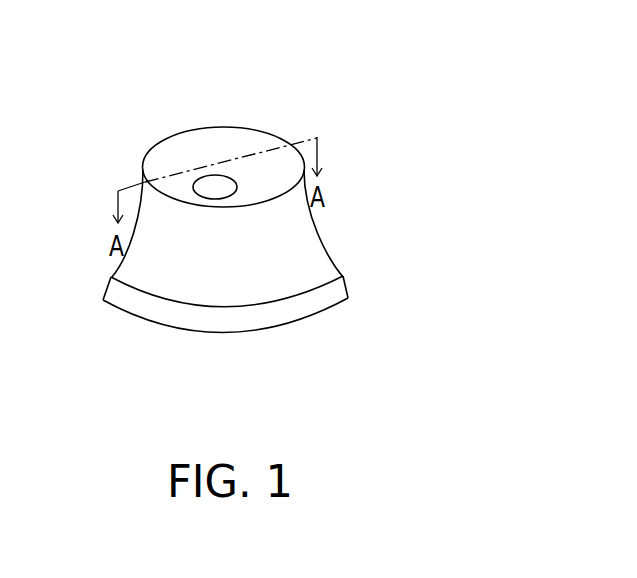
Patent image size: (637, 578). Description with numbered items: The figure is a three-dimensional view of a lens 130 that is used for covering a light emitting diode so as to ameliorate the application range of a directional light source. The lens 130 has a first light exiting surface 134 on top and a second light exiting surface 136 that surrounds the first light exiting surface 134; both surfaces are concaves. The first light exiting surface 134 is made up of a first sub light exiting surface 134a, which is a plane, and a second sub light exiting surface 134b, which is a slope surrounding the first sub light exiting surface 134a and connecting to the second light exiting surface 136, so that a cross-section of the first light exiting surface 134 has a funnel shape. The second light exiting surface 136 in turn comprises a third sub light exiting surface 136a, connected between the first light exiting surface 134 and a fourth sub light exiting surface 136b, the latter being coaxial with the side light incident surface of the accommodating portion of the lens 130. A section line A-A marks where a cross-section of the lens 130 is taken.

The lens 130 is at (306, 188).
The first light exiting surface 134 is at (231, 103).
The first sub light exiting surface 134a is at (223, 188).
The second sub light exiting surface 134b is at (218, 143).
The second light exiting surface 136 is at (306, 251).
The third sub light exiting surface 136a is at (322, 245).
The fourth sub light exiting surface 136b is at (347, 287).